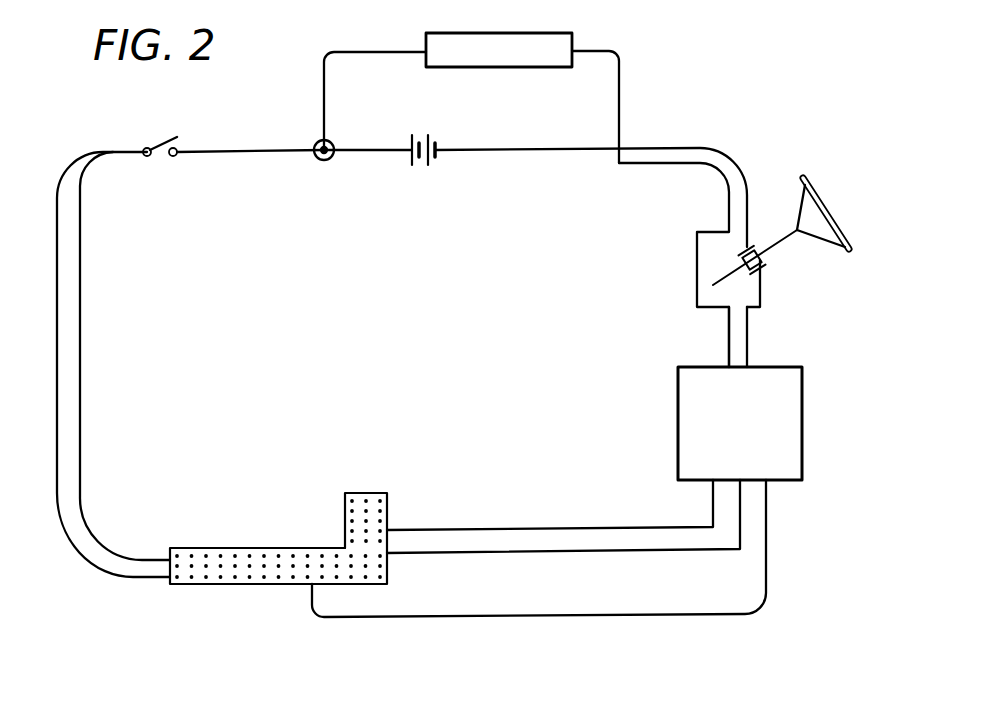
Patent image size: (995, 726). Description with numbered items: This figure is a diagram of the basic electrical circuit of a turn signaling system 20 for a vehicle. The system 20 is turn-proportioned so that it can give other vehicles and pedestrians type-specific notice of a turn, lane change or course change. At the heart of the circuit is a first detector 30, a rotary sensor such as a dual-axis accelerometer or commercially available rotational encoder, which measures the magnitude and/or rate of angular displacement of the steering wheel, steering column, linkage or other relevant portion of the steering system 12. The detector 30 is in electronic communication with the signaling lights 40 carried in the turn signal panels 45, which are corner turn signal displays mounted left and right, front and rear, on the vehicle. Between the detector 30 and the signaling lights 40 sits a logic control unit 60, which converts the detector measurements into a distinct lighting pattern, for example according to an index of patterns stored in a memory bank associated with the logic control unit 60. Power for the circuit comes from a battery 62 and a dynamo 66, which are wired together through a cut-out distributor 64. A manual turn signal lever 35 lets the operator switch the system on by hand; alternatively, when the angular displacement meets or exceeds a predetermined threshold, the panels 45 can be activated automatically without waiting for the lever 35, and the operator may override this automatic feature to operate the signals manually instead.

The steering system 12 is at (820, 188).
The turn signaling system 20 is at (697, 105).
The first detector 30 is at (764, 259).
The manual turn signal lever 35 is at (167, 141).
The signaling lights 40 is at (267, 560).
The turn signal panel 45 is at (368, 492).
The logic control unit 60 is at (755, 441).
The battery 62 is at (423, 170).
The cut-out distributor 64 is at (323, 161).
The dynamo 66 is at (498, 55).